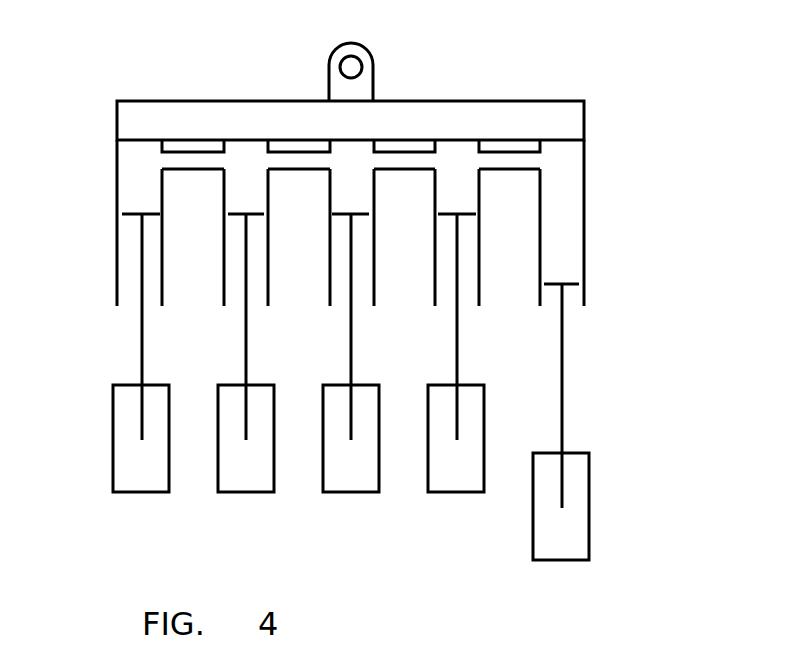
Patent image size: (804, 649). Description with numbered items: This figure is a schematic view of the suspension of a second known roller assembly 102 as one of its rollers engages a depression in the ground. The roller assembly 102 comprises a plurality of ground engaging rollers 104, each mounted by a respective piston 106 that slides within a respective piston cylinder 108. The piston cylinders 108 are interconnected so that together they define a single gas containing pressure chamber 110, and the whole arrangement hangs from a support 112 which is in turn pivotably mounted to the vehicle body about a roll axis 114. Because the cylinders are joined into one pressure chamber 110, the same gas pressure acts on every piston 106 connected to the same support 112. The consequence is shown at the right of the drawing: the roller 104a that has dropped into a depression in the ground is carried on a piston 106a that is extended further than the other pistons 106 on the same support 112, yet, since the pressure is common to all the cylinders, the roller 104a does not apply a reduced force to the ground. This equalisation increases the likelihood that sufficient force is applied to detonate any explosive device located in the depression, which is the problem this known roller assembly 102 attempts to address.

The roller assembly 102 is at (642, 279).
The ground engaging rollers 104 is at (463, 480).
The roller 104a is at (575, 504).
The pistons 106 is at (456, 346).
The piston 106a is at (562, 397).
The piston cylinders 108 is at (585, 235).
The pressure chamber 110 is at (563, 182).
The support 112 is at (563, 125).
The roll axis 114 is at (351, 67).